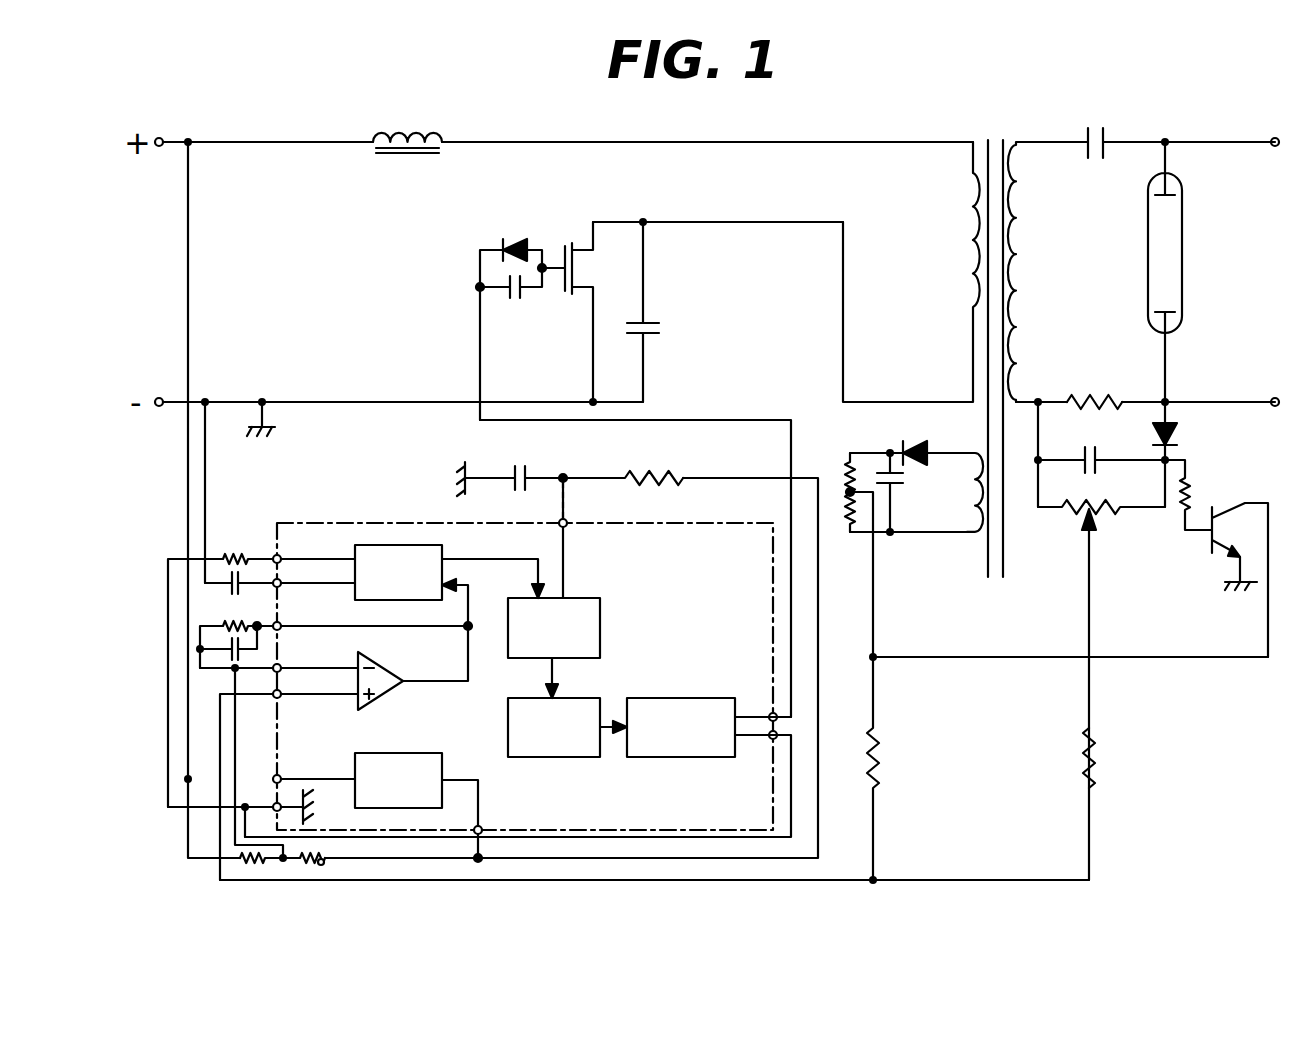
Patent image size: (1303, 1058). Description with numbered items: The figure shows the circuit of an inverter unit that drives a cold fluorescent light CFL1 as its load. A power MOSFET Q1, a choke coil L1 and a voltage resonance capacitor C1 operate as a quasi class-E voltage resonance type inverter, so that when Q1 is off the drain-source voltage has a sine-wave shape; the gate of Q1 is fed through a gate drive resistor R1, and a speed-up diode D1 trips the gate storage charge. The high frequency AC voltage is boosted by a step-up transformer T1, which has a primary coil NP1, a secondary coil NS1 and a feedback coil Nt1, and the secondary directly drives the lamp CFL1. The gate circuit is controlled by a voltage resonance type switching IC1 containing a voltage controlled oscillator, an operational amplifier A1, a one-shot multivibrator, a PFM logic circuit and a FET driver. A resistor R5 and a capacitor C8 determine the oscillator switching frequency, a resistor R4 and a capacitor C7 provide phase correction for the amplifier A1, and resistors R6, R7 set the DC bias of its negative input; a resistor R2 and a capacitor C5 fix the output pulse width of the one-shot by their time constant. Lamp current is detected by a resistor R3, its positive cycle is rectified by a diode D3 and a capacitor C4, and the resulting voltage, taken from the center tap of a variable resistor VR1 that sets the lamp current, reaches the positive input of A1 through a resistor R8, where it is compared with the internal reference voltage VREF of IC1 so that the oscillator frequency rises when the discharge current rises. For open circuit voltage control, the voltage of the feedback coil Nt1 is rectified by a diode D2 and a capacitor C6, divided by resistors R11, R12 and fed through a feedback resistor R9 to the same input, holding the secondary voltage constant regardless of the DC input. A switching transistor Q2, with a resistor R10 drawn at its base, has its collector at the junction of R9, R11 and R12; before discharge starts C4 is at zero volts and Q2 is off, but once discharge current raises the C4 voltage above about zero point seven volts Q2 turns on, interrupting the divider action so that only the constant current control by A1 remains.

The choke coil L1 is at (407, 121).
The speed-up diode D1 is at (510, 310).
The power MOSFET Q1 is at (565, 301).
The gate drive resistor R1 is at (509, 304).
The voltage resonance capacitor C1 is at (875, 246).
The step-up transformer T1 is at (996, 333).
The primary coil NP1 is at (913, 272).
The secondary coil NS1 is at (1055, 272).
The cold fluorescent light CFL1 is at (1215, 272).
The lamp current detecting resistor R3 is at (1094, 383).
The diode D3 is at (1190, 431).
The capacitor C4 is at (1101, 454).
The variable resistor VR1 is at (1102, 690).
The resistor R10 is at (1213, 495).
The switching transistor Q2 is at (1222, 580).
The feedback coil Nt1 is at (962, 469).
The diode D2 is at (908, 436).
The capacitor C6 is at (908, 492).
The resistor R11 is at (848, 462).
The resistor R12 is at (852, 522).
The feedback resistor R9 is at (744, 768).
The resistor R8 is at (1115, 758).
The voltage resonance type switching IC IC1 is at (427, 538).
The operational amplifier A1 is at (415, 660).
The internal reference voltage VREF is at (513, 812).
The resistor R5 is at (220, 659).
The capacitor C8 is at (246, 590).
The resistor R4 is at (223, 622).
The capacitor C7 is at (246, 652).
The resistor R7 is at (262, 865).
The resistor R6 is at (318, 865).
The capacitor C5 is at (512, 475).
The resistor R2 is at (623, 458).